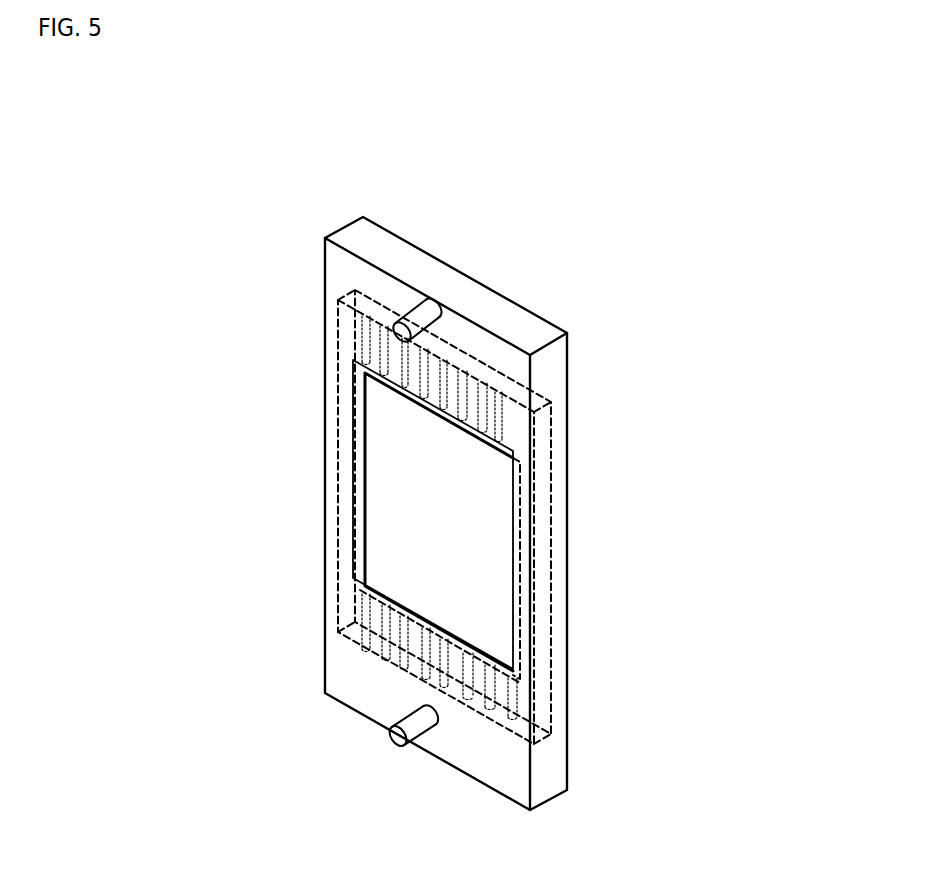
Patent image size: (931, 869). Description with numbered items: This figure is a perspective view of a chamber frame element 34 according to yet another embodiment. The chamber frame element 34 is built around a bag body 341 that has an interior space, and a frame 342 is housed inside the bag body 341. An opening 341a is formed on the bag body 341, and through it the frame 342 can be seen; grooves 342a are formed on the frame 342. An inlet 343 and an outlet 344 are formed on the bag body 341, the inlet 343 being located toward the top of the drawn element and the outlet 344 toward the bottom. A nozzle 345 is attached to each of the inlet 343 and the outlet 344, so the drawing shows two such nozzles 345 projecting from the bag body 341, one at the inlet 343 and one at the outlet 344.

The chamber frame element 34 is at (525, 215).
The bag body 341 is at (517, 337).
The opening 341a is at (385, 447).
The frame 342 is at (547, 563).
The grooves 342a is at (456, 632).
The inlet 343 is at (433, 308).
The outlet 344 is at (432, 710).
The nozzle 345 is at (405, 322).